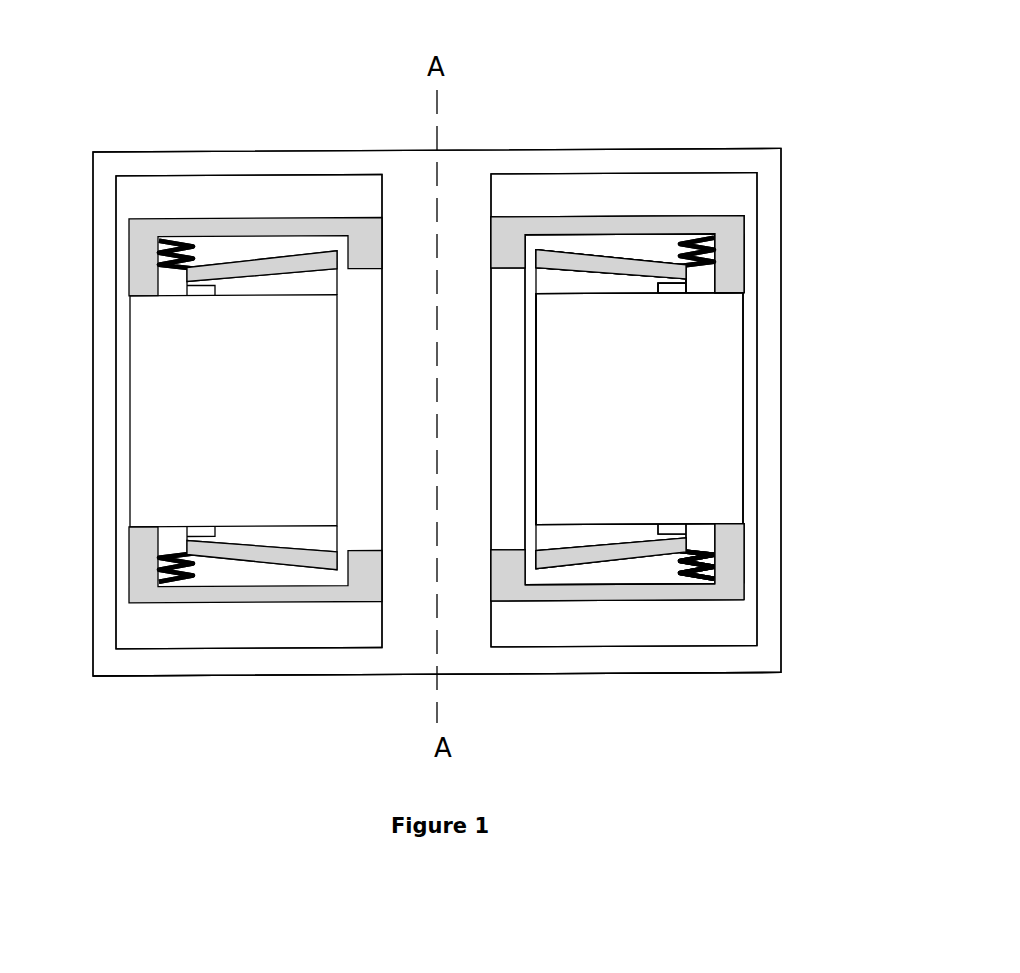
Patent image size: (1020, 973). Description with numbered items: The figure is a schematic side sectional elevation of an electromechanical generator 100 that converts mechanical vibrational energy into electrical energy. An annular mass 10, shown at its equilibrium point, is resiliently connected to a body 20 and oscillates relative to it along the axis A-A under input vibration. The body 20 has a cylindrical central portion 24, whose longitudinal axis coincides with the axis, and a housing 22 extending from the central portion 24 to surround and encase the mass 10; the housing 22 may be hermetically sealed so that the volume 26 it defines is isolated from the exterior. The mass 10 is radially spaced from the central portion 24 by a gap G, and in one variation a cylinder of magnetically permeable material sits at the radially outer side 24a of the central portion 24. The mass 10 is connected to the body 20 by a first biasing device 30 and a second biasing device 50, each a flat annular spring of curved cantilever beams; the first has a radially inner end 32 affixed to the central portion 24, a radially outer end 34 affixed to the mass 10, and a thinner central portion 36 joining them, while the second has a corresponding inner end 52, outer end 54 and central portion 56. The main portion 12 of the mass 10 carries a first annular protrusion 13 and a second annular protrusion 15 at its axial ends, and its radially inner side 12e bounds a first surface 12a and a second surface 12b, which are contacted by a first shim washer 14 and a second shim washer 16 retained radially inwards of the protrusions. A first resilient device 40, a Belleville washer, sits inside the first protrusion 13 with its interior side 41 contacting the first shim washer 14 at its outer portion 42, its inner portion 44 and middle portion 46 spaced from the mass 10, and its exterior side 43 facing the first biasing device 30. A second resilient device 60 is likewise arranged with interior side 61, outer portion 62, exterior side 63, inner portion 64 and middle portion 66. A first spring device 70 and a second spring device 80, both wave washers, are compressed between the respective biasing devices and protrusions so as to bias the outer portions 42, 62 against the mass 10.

The electromechanical generator 100 is at (101, 90).
The body 20 is at (464, 160).
The housing 22 is at (740, 660).
The central portion 24 is at (405, 505).
The radially outer side 24a is at (527, 349).
The volume 26 is at (742, 633).
The gap G is at (527, 455).
The annular mass 10 is at (703, 378).
The main portion 12 is at (662, 419).
The first surface 12a is at (297, 293).
The second surface 12b is at (276, 530).
The radially inner side 12e is at (540, 380).
The first annular protrusion 13 is at (702, 274).
The first annular shim washer 14 is at (678, 300).
The second annular protrusion 15 is at (702, 533).
The second annular shim washer 16 is at (675, 530).
The first biasing device 30 is at (553, 262).
The radially inner end 32 is at (511, 232).
The radially outer end 34 is at (740, 281).
The central portion 36 is at (585, 262).
The first resilient device 40 is at (745, 250).
The interior side 41 is at (566, 250).
The outer portion 42 is at (676, 296).
The exterior side 43 is at (747, 220).
The inner portion 44 is at (583, 265).
The middle portion 46 is at (627, 252).
The second biasing device 50 is at (581, 597).
The radially inner end 52 is at (515, 581).
The radially outer end 54 is at (722, 548).
The central portion 56 is at (638, 598).
The second resilient device 60 is at (690, 578).
The interior side 61 is at (563, 538).
The outer portion 62 is at (690, 559).
The exterior side 63 is at (590, 567).
The inner portion 64 is at (705, 602).
The middle portion 66 is at (700, 571).
The first spring device 70 is at (157, 240).
The second spring device 80 is at (158, 588).